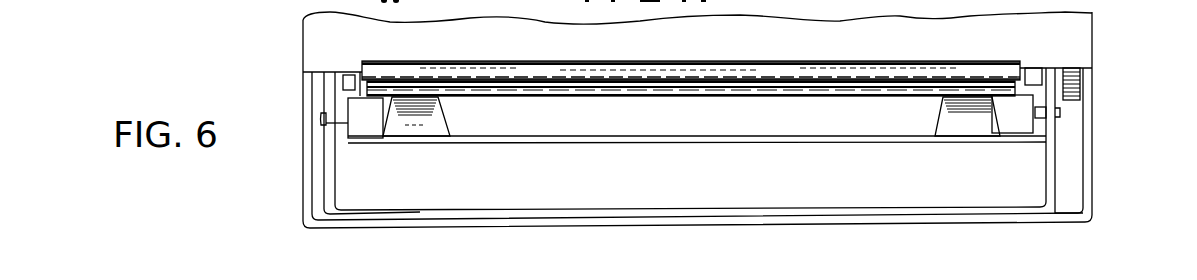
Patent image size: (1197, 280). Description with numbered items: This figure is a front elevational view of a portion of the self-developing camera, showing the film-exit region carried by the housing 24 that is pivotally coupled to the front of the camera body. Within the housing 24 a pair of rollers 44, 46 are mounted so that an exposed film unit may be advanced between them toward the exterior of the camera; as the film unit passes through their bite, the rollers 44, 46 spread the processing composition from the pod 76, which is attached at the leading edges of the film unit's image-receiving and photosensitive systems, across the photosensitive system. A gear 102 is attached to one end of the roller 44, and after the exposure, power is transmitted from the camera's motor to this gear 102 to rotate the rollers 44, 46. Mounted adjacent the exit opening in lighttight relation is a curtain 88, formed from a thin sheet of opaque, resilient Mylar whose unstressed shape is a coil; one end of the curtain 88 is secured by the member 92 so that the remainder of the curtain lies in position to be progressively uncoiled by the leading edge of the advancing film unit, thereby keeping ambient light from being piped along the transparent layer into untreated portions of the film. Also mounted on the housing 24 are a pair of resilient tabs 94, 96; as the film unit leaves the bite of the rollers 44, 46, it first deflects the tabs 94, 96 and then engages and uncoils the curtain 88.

The housing 24 is at (680, 232).
The roller 44 is at (350, 88).
The roller 46 is at (362, 135).
The pod 76 is at (735, 87).
The curtain 88 is at (837, 68).
The member 92 is at (946, 31).
The resilient tab 94 is at (427, 135).
The resilient tab 96 is at (980, 135).
The gear 102 is at (1076, 80).